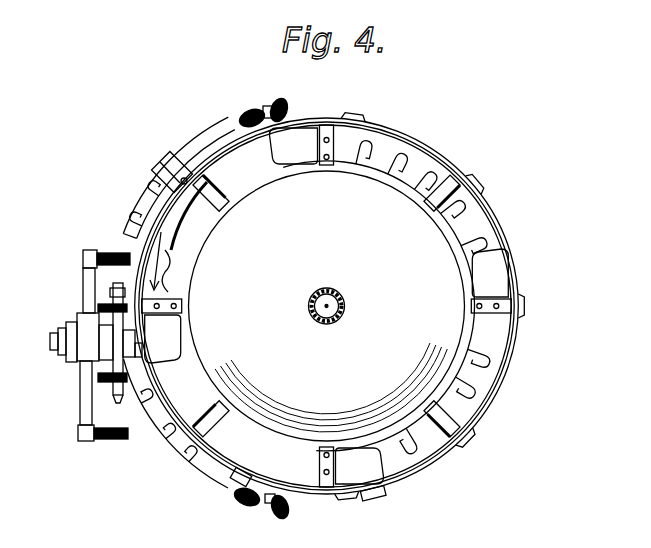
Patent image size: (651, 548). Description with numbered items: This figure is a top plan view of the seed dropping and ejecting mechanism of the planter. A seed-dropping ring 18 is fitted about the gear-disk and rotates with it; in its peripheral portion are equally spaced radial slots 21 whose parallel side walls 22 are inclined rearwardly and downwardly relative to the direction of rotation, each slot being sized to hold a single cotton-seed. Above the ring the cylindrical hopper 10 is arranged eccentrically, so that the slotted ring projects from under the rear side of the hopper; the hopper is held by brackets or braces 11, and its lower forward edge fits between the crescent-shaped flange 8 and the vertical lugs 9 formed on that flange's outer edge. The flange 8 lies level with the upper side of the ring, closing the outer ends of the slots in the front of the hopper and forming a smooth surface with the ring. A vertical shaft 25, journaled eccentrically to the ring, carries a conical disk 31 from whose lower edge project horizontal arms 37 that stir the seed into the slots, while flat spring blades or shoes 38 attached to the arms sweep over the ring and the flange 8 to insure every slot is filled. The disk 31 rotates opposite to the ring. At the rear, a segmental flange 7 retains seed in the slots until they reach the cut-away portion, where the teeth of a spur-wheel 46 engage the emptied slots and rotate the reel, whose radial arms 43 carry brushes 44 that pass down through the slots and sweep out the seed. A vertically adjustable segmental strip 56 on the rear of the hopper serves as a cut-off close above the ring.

The segmental flange 7 is at (131, 207).
The crescent-shaped flange 8 is at (500, 378).
The vertical lugs 9 is at (343, 117).
The cylindrical hopper 10 is at (512, 267).
The brackets or braces 11 is at (170, 167).
The seed-dropping ring 18 is at (143, 487).
The radial slots 21 is at (150, 185).
The inclined side walls 22 is at (468, 387).
The vertical shaft 25 is at (331, 304).
The conical disk 31 is at (327, 306).
The horizontal arms 37 is at (505, 308).
The blades or leaf-springs (shoes) 38 is at (308, 137).
The radial arms of the reel 43 is at (85, 290).
The brush 44 is at (106, 260).
The spur-wheel 46 is at (116, 397).
The segmental strip 56 is at (165, 245).